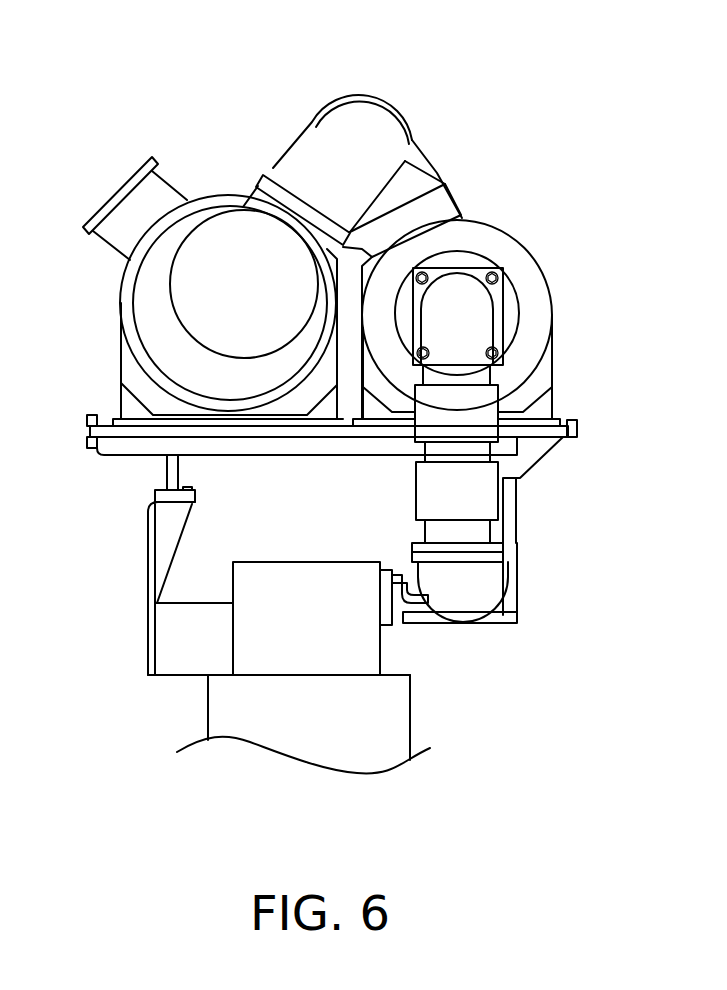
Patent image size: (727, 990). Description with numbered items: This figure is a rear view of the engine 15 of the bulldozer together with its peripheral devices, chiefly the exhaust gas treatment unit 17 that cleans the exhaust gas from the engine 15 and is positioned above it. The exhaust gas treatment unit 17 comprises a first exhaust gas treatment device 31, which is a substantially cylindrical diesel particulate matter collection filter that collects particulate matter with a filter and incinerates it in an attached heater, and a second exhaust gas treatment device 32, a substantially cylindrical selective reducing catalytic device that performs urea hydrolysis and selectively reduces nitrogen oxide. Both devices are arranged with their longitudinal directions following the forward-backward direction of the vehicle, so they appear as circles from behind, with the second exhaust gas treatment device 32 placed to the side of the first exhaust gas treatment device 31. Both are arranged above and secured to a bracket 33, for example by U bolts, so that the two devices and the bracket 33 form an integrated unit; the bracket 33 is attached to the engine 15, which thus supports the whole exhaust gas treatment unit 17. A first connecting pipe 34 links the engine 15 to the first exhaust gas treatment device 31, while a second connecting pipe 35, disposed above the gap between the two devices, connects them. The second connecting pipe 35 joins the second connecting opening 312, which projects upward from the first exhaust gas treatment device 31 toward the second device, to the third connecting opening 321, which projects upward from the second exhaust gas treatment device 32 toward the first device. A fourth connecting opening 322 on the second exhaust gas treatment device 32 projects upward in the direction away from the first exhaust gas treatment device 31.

The engine 15 is at (186, 710).
The exhaust gas treatment unit 17 is at (242, 142).
The first exhaust gas treatment device 31 is at (510, 247).
The second connecting opening 312 is at (462, 218).
The second exhaust gas treatment device 32 is at (122, 300).
The third connecting opening 321 is at (268, 193).
The fourth connecting opening 322 is at (133, 200).
The bracket 33 is at (125, 457).
The first connecting pipe 34 is at (487, 407).
The second connecting pipe 35 is at (367, 108).